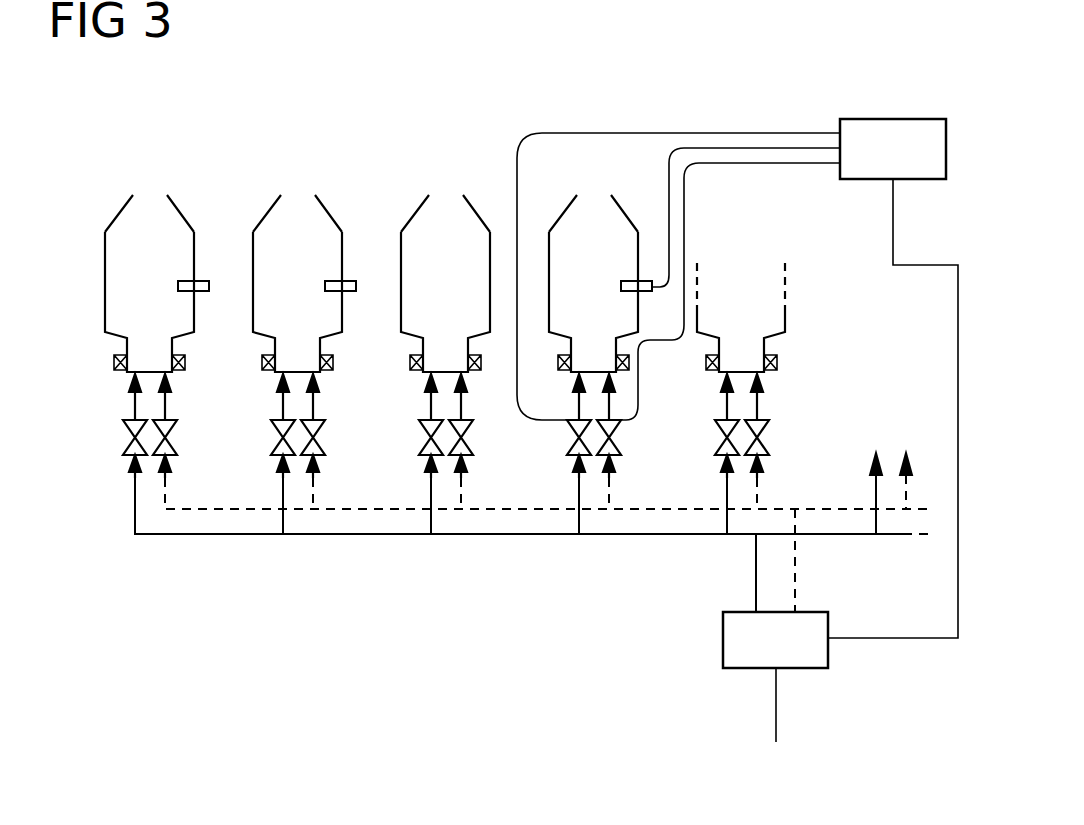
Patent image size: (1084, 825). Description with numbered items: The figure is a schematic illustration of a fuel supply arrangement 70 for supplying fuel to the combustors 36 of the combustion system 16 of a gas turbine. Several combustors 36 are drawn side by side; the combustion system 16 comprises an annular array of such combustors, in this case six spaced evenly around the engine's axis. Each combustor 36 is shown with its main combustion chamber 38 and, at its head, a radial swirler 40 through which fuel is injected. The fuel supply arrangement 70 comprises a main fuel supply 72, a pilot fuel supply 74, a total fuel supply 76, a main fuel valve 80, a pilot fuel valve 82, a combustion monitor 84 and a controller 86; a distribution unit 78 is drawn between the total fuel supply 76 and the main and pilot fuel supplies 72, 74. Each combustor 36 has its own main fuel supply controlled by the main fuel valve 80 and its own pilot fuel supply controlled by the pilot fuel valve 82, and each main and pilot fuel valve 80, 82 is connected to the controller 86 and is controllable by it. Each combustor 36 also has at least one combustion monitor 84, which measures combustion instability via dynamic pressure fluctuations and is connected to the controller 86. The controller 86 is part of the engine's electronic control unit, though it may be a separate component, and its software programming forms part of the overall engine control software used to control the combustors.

The combustor system 16 is at (133, 157).
The combustor 36 is at (105, 232).
The main combustion chamber 38 is at (116, 293).
The radial swirler 40 is at (114, 361).
The fuel supply arrangement 70 is at (348, 617).
The main fuel supply 72 is at (755, 573).
The pilot fuel supply 74 is at (796, 573).
The total fuel supply 76 is at (777, 703).
The fuel distribution unit 78 is at (723, 638).
The main fuel valve 80 is at (125, 447).
The pilot fuel valve 82 is at (175, 450).
The combustion monitor 84 is at (197, 281).
The controller 86 is at (893, 119).